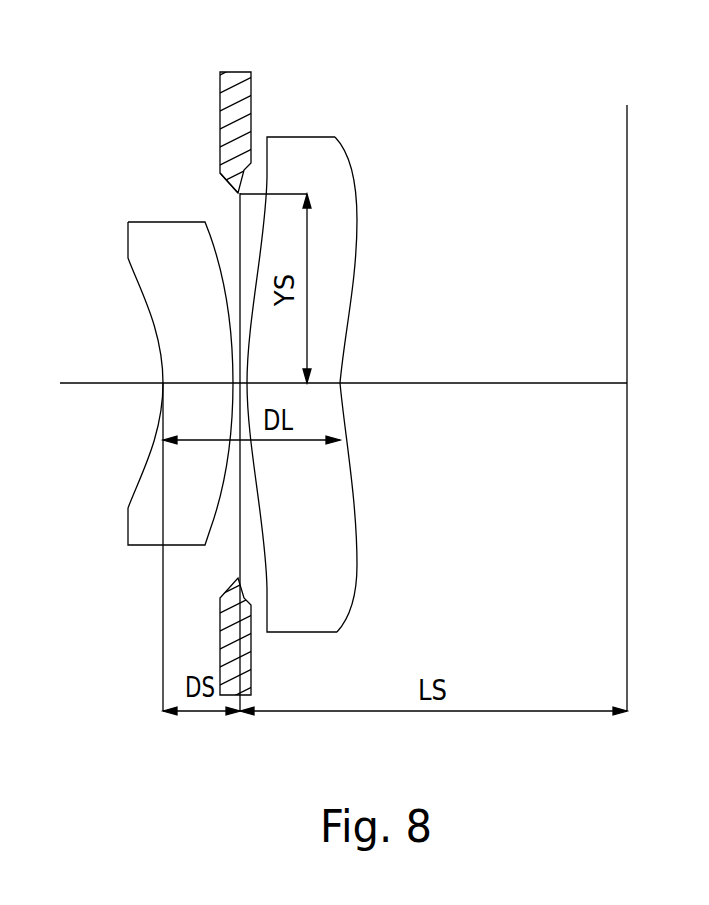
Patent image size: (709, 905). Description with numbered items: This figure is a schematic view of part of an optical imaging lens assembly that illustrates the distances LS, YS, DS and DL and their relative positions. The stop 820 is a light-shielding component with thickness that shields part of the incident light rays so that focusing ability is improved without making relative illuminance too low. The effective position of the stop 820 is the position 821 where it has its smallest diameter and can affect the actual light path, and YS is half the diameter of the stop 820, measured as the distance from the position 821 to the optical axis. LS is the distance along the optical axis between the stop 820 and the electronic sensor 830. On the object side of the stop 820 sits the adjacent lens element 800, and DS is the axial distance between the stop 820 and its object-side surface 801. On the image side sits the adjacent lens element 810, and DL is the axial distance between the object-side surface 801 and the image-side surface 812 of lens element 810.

The lens element 800 is at (132, 355).
The object-side surface 801 is at (148, 462).
The lens element 810 is at (341, 350).
The image-side surface 812 is at (347, 455).
The stop 820 is at (220, 372).
The position 821 is at (238, 194).
The electronic sensor 830 is at (626, 158).